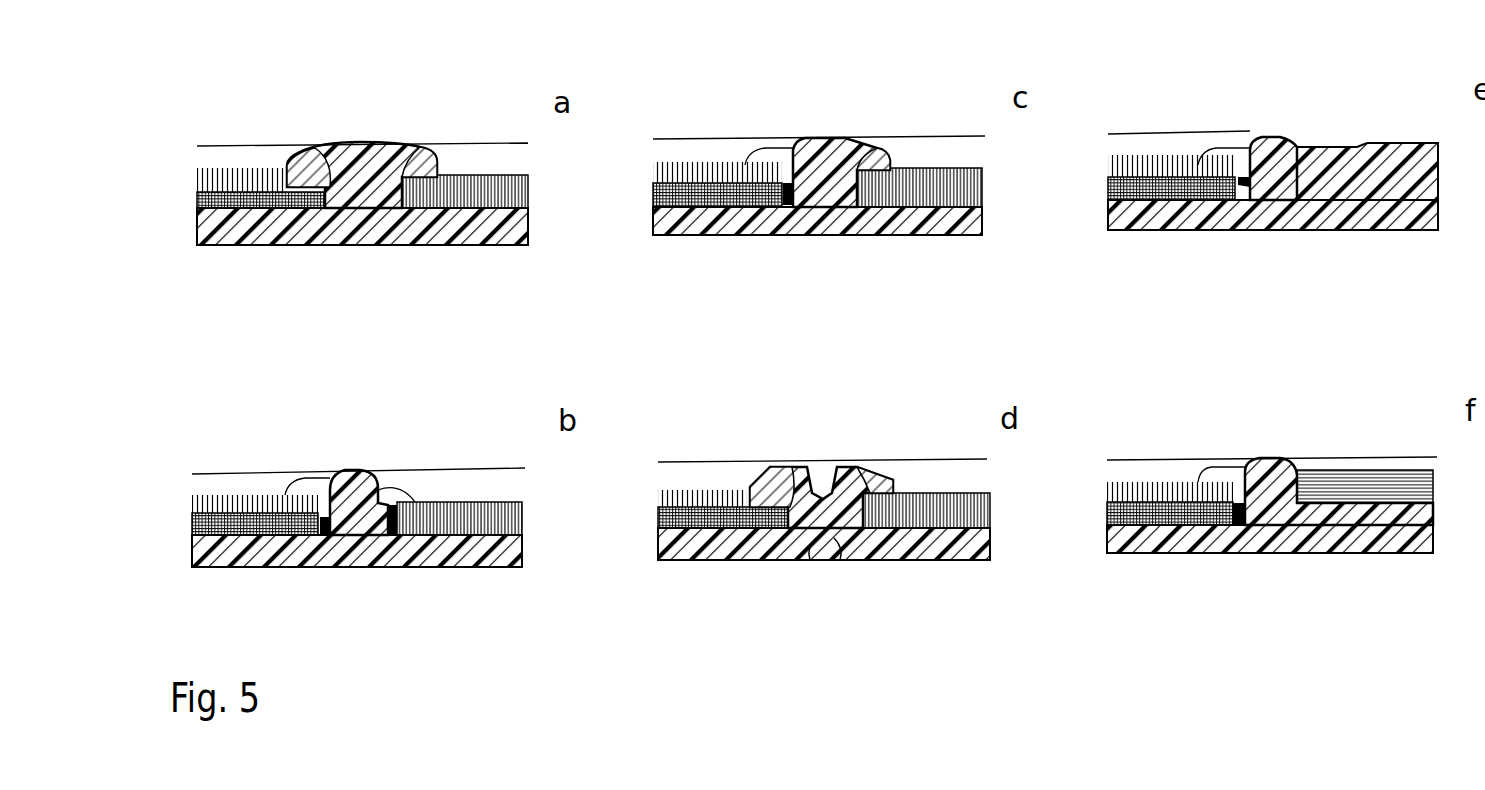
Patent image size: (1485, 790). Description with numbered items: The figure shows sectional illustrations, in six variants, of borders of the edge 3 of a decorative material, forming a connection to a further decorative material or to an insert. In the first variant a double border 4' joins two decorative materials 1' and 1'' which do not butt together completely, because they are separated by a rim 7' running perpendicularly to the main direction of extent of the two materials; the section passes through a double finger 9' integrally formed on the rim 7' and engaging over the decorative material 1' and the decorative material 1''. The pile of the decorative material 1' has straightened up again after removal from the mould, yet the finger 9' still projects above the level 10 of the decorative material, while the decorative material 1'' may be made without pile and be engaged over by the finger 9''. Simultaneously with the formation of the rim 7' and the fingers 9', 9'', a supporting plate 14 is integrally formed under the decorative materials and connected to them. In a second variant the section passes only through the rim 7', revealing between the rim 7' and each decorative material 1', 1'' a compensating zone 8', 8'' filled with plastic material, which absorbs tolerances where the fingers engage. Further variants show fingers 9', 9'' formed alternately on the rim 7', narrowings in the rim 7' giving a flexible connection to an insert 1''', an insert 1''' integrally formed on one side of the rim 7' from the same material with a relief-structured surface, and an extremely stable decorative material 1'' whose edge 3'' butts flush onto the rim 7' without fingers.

The decorative material 1' is at (700, 399).
The decorative material 1'' is at (922, 391).
The insert 1''' is at (1367, 211).
The edge 3 is at (814, 297).
The edge 3'' is at (1365, 451).
The double border 4' is at (808, 244).
The rim 7' is at (860, 376).
The compensating zone 8' is at (775, 399).
The compensating zone 8'' is at (398, 560).
The finger 9' is at (728, 293).
The finger 9'' is at (658, 293).
The level of the decorative material 10 is at (212, 163).
The supporting plate 14 is at (248, 230).